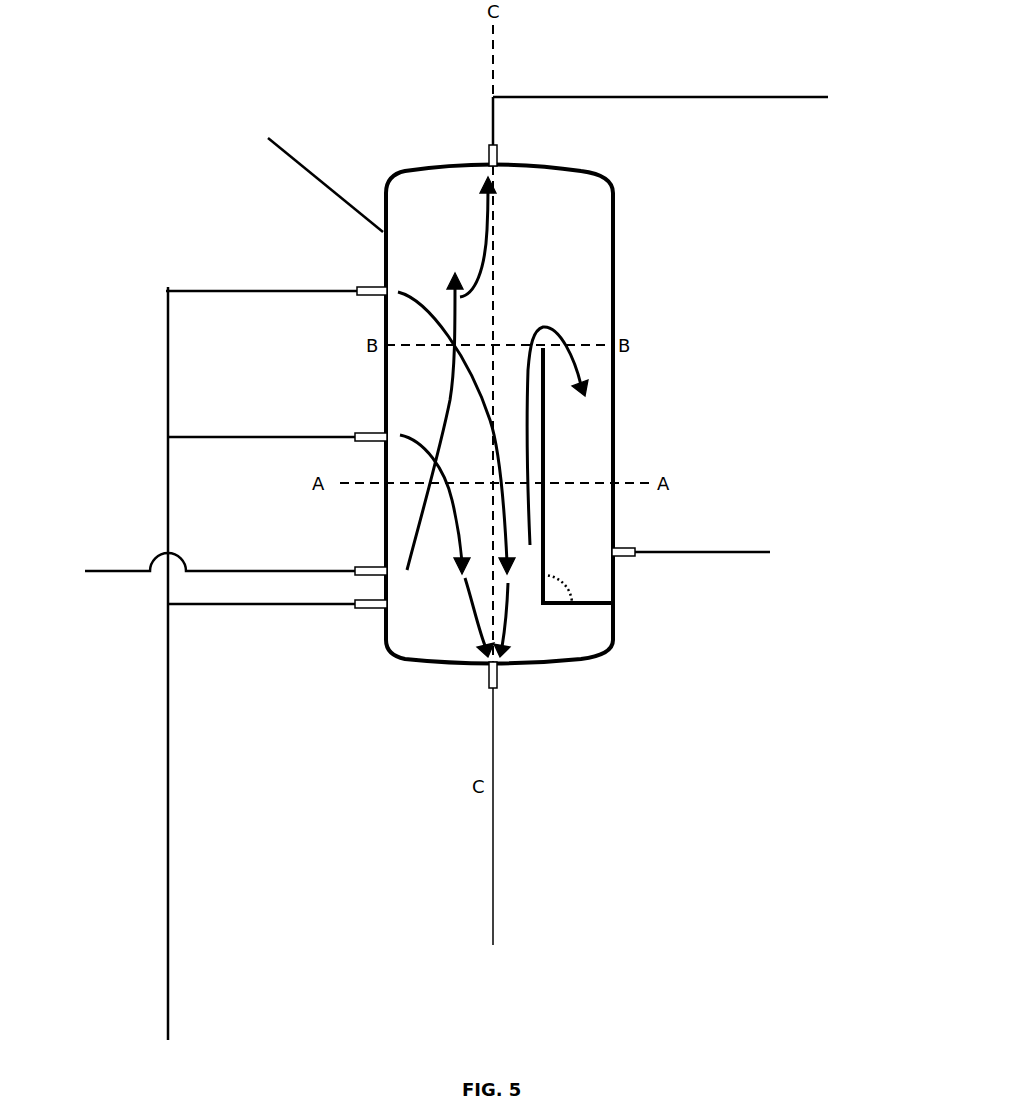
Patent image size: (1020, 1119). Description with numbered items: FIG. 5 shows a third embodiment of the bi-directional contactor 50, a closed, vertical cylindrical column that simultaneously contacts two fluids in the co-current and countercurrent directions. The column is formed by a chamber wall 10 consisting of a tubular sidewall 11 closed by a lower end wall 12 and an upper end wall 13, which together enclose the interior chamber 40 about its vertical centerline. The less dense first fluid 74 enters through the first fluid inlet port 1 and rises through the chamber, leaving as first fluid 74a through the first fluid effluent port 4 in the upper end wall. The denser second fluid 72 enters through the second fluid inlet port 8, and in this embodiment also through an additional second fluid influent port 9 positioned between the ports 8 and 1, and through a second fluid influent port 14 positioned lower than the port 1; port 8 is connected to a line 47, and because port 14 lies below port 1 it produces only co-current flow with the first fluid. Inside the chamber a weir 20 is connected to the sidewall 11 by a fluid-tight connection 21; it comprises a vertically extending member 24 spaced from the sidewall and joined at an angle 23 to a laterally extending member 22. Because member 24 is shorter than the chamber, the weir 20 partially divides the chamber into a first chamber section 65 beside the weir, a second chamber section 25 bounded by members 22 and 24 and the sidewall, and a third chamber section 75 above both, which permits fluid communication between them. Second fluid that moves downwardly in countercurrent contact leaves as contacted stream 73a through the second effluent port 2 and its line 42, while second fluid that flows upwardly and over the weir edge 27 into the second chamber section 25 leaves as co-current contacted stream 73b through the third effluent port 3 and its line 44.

The first fluid inlet port 1 is at (375, 566).
The second effluent port 2 is at (498, 676).
The third effluent port 3 is at (627, 548).
The first fluid effluent port 4 is at (488, 153).
The second fluid inlet port 8 is at (380, 285).
The additional second fluid influent port 9 is at (380, 432).
The chamber wall 10 is at (308, 160).
The sidewall 11 is at (613, 235).
The lower end wall 12 is at (410, 655).
The upper end wall 13 is at (443, 168).
The second fluid influent port 14 is at (374, 609).
The weir 20 is at (543, 367).
The connection 21 is at (615, 605).
The horizontally extending member 22 is at (560, 605).
The angle 23 is at (565, 607).
The vertically extending member 24 is at (545, 415).
The second chamber section 25 is at (588, 452).
The weir edge 27 is at (556, 336).
The chamber 40 is at (540, 222).
The line 42 is at (496, 832).
The line 44 is at (700, 550).
The line 47 is at (168, 762).
The bi-directional contactor 50 is at (233, 207).
The first chamber section 65 is at (429, 430).
The second fluid 72 is at (410, 291).
The contacted second fluid stream 73a is at (508, 603).
The contacted second fluid stream 73b is at (556, 336).
The first fluid 74 is at (421, 570).
The first fluid 74a is at (466, 237).
The third chamber section 75 is at (441, 217).